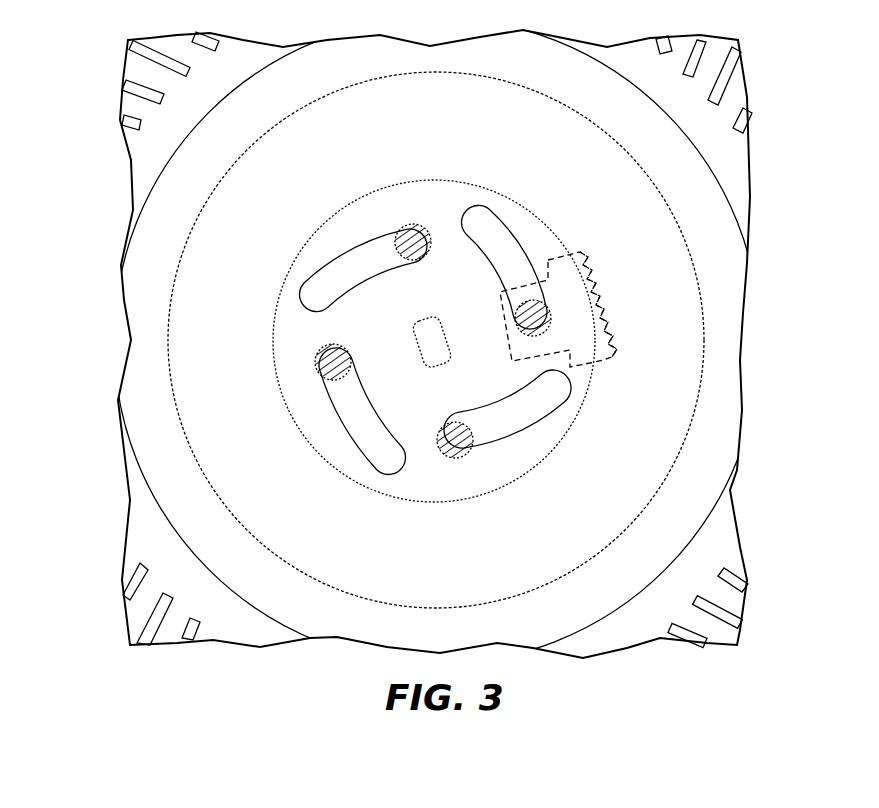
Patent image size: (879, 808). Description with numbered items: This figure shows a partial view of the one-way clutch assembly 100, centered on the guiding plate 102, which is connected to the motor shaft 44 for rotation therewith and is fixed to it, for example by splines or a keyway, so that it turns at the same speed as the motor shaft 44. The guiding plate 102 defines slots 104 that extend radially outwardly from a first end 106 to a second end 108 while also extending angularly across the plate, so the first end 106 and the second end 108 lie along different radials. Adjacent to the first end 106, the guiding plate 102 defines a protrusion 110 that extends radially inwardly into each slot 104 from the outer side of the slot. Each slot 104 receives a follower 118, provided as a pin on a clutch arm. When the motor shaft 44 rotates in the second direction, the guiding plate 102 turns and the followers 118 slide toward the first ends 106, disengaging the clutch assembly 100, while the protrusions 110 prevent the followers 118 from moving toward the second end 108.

The one-way clutch assembly 100 is at (183, 460).
The guiding plate 102 is at (550, 244).
The slot 104 is at (541, 238).
The first end 106 is at (557, 335).
The second end 108 is at (477, 206).
The protrusion 110 is at (395, 233).
The follower 118 is at (462, 447).
The motor shaft 44 is at (413, 347).